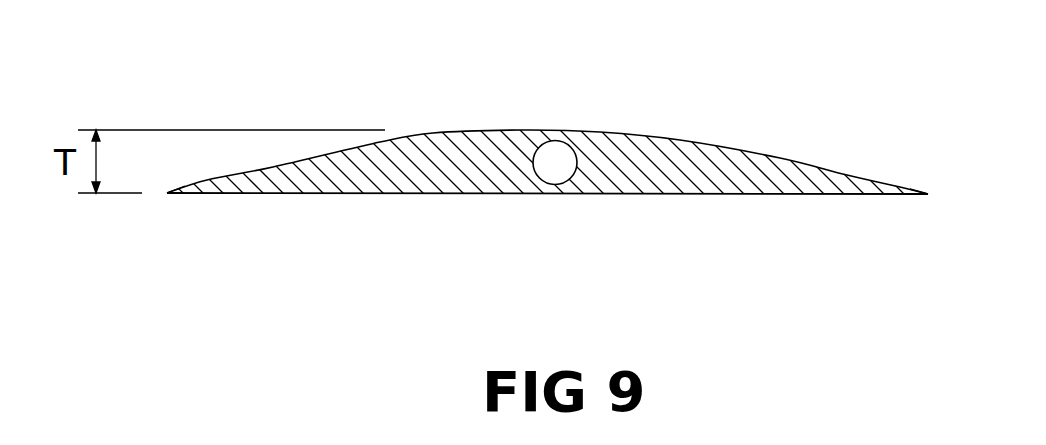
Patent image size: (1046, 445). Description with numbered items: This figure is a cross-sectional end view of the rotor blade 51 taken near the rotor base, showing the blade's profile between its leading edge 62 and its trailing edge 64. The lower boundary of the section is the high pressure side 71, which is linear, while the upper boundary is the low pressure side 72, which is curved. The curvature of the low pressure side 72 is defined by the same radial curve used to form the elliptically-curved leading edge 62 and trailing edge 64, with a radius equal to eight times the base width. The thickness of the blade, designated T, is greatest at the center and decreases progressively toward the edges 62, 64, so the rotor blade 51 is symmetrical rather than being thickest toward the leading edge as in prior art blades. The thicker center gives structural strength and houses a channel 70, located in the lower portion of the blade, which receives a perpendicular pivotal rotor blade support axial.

The rotor blade 51 is at (565, 172).
The leading edge 62 is at (170, 208).
The trailing edge 64 is at (931, 208).
The channel 70 is at (555, 195).
The high pressure side 71 is at (342, 208).
The low pressure side 72 is at (430, 125).